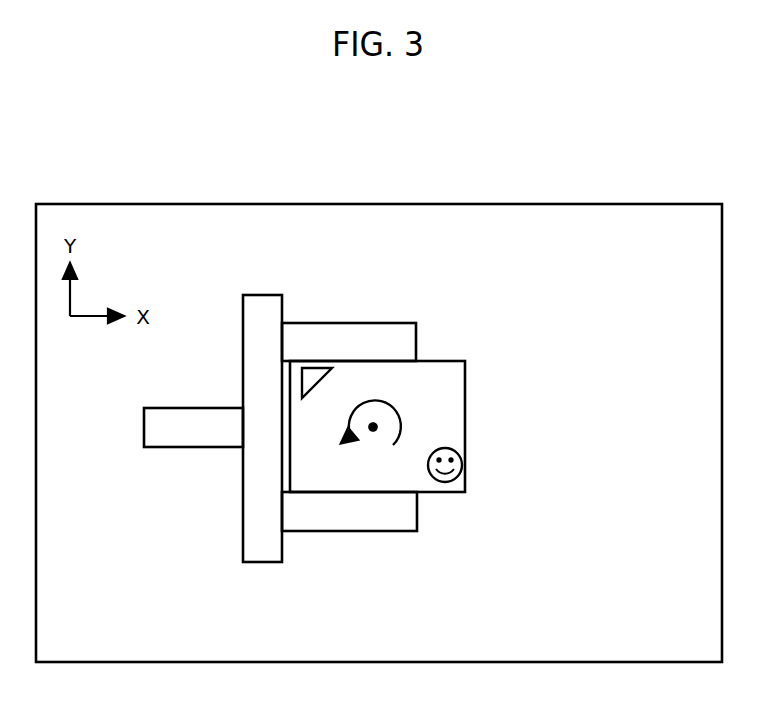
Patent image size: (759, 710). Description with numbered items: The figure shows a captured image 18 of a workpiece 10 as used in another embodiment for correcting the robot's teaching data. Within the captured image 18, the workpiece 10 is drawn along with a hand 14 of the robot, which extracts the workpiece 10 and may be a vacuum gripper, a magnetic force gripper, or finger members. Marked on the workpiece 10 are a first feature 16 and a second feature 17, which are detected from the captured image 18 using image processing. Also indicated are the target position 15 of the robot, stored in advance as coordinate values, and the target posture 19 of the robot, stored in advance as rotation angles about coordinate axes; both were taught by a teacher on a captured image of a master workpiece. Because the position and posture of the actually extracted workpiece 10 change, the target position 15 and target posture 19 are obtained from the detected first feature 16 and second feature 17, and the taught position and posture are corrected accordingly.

The workpiece 10 is at (440, 361).
The hand 14 is at (208, 408).
The target position 15 is at (375, 431).
The first feature 16 is at (313, 371).
The second feature 17 is at (456, 449).
The captured image 18 is at (587, 204).
The target posture 19 is at (398, 412).